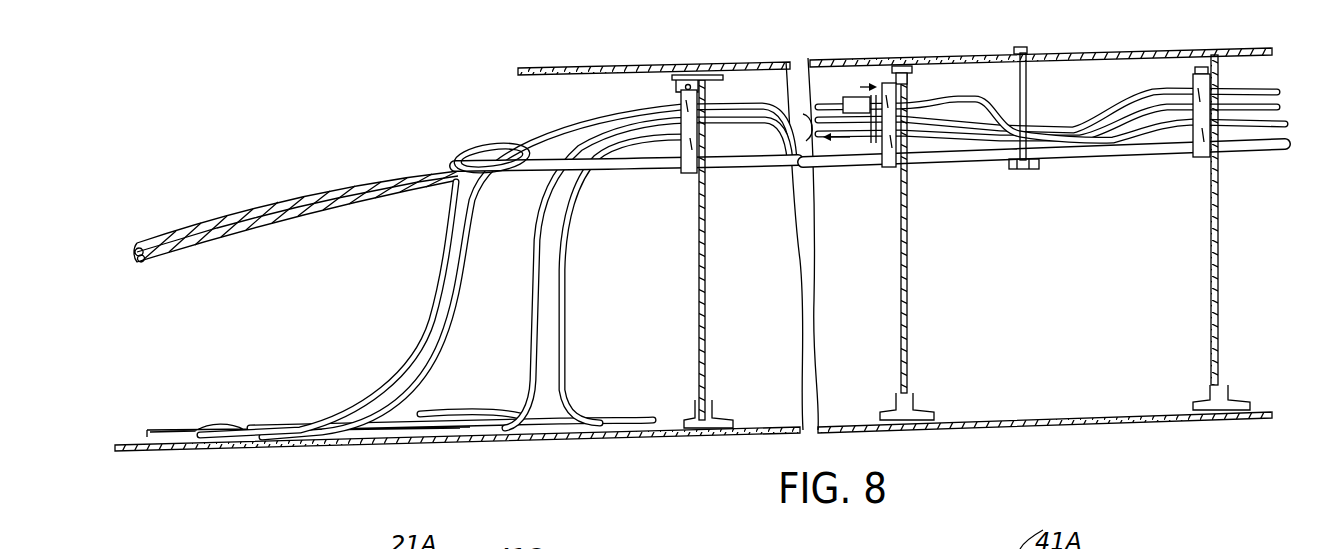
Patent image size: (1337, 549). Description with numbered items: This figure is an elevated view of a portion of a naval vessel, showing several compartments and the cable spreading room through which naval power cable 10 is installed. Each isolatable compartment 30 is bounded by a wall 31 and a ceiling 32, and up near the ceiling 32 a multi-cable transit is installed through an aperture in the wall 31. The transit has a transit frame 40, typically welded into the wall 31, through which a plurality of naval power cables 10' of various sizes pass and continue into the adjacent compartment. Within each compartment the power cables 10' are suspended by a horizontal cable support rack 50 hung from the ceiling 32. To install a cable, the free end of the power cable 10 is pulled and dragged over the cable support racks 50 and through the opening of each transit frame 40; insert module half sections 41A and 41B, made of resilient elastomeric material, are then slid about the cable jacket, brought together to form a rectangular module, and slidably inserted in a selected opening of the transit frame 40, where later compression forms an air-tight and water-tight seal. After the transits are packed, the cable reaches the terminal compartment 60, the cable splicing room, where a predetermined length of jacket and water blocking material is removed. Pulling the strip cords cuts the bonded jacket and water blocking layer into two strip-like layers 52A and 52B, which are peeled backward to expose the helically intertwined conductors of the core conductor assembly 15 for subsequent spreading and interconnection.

The power cable 10 is at (881, 151).
The naval power cables 10' is at (1146, 73).
The core conductor assembly 15 is at (334, 188).
The isolatable compartment 30 is at (873, 288).
The wall 31 is at (908, 242).
The ceiling 32 is at (741, 63).
The transit frame 40 is at (681, 93).
The insert module half section 41A is at (843, 97).
The insert module half section 41B is at (860, 145).
The horizontal cable support rack 50 is at (1038, 169).
The strip-like layer 52A is at (480, 146).
The strip-like layer 52B is at (440, 243).
The terminal compartment 60 is at (268, 192).